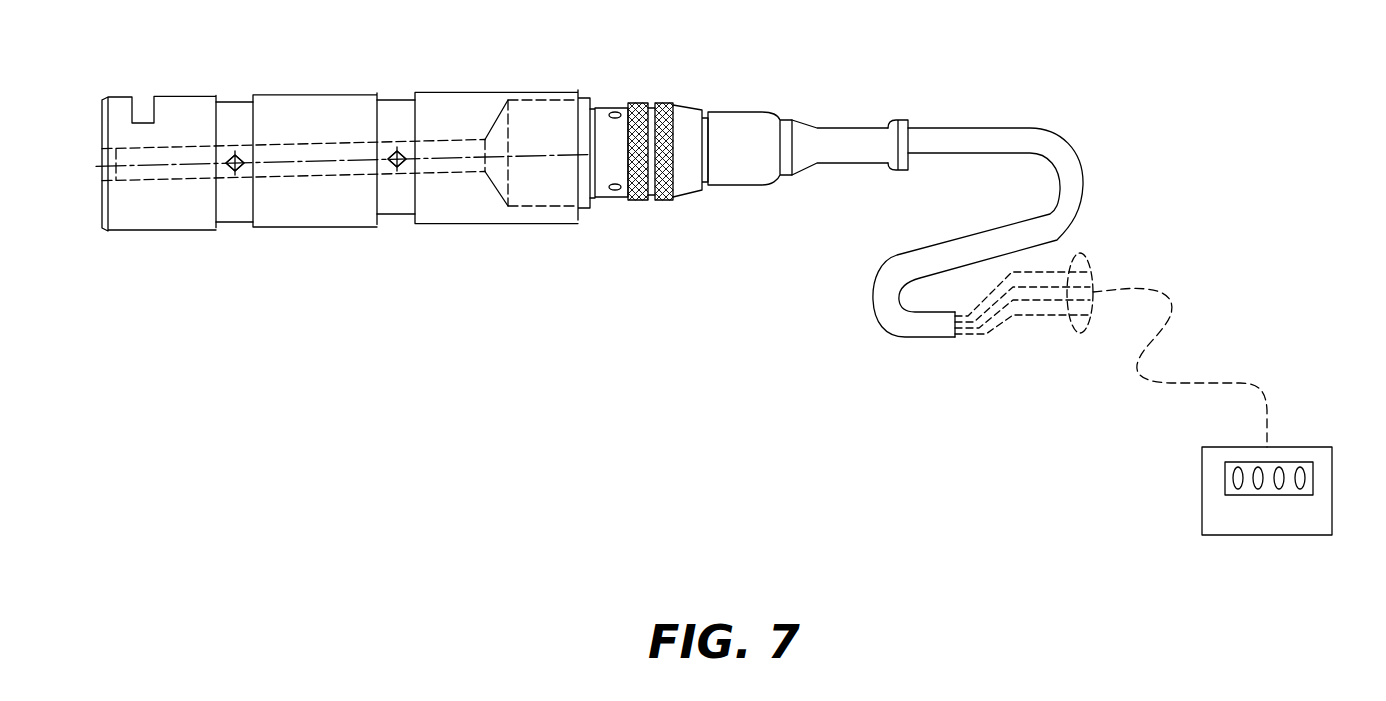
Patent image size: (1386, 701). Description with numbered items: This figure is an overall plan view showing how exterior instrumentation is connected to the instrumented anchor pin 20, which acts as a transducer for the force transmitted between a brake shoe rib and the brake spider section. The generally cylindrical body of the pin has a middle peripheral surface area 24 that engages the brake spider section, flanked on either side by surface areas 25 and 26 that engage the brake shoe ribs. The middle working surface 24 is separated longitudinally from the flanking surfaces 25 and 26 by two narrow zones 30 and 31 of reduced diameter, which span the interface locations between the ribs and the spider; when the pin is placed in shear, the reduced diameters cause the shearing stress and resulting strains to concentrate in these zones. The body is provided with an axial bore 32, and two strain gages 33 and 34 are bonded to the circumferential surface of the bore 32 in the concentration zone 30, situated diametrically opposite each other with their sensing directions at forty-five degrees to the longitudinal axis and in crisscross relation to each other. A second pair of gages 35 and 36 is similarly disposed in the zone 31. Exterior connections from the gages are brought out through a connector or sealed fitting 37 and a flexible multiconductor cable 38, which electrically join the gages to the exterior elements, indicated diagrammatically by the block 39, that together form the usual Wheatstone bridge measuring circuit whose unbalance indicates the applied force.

The instrumented anchor pin 20 is at (346, 153).
The middle peripheral surface area 24 is at (305, 94).
The flanking surface area 25 is at (165, 96).
The flanking surface area 26 is at (440, 93).
The zone of reduced diameter 30 is at (412, 202).
The zone of reduced diameter 31 is at (245, 208).
The axial bore 32 is at (467, 173).
The strain gage 33 is at (388, 160).
The strain gage 34 is at (397, 159).
The strain gage 35 is at (226, 164).
The strain gage 36 is at (235, 163).
The connector 37 is at (617, 103).
The flexible multiconductor cable 38 is at (1010, 127).
The block 39 is at (1335, 495).